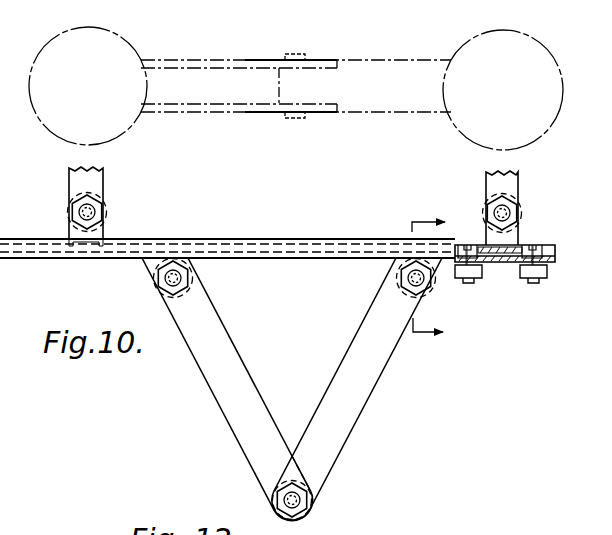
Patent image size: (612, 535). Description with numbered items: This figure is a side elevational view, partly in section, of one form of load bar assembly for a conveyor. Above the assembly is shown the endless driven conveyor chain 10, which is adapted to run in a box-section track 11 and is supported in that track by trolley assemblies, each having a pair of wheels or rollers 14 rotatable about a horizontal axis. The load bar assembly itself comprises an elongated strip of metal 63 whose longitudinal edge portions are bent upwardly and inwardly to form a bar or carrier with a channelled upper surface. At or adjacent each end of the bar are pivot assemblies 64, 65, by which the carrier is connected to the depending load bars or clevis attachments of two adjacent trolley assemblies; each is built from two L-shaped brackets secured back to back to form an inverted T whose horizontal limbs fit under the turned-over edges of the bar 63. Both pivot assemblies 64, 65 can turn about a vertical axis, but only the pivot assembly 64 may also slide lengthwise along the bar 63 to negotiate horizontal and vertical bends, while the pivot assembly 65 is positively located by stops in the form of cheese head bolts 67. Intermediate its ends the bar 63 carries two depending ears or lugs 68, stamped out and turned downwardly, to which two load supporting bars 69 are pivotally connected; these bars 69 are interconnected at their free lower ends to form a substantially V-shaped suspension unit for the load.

The endless driven conveyor chain 10 is at (330, 57).
The wheels or rollers 14 is at (133, 42).
The elongated strip of metal 63 is at (285, 238).
The pivot assembly 64 is at (112, 229).
The pivot assembly 65 is at (527, 223).
The cheese head bolts 67 is at (472, 243).
The depending ears or lugs 68 is at (190, 262).
The load supporting bars 69 is at (320, 418).
The track 11 is at (435, 281).